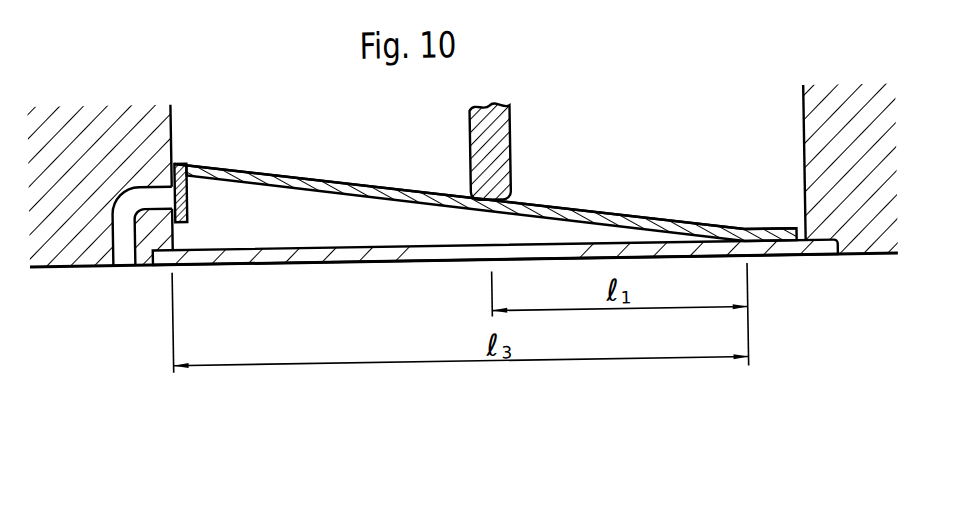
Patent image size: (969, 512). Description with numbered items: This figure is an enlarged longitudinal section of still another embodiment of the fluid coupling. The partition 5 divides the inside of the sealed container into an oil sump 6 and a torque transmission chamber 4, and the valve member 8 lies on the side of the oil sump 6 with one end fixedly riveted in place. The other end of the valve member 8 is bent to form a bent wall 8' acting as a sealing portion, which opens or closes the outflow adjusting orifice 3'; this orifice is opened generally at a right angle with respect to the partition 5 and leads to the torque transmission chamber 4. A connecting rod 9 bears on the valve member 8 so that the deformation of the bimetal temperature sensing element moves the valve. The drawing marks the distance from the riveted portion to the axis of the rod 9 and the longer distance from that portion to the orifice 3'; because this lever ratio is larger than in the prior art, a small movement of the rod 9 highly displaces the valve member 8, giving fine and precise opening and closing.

The outflow adjusting orifice 3' is at (143, 255).
The torque transmission chamber 4 is at (382, 267).
The partition 5 is at (273, 268).
The oil sump 6 is at (429, 199).
The valve member 8 is at (484, 172).
The bent wall 8' is at (208, 192).
The connecting rod 9 is at (506, 150).